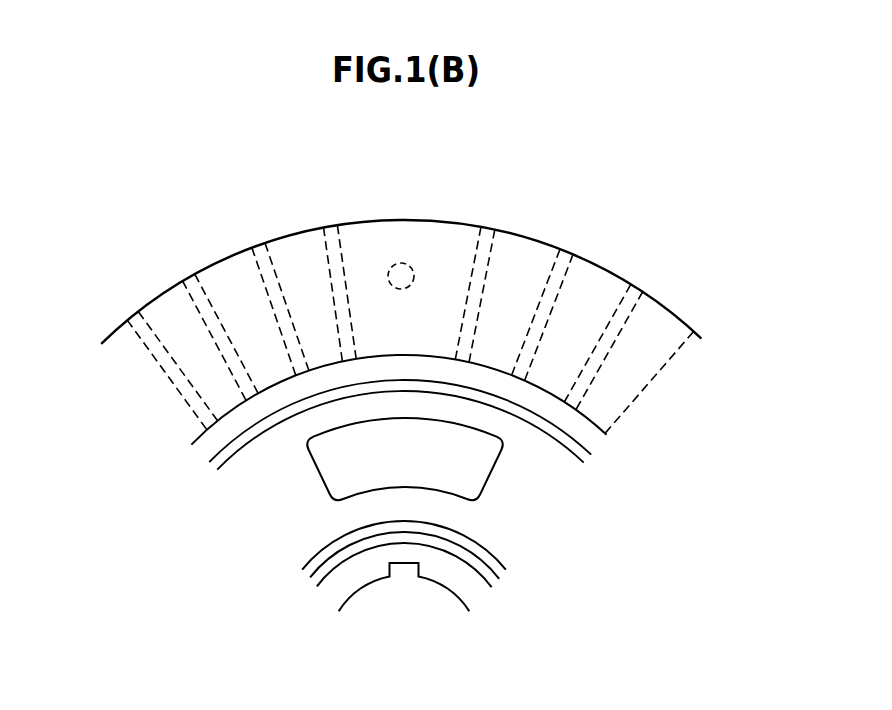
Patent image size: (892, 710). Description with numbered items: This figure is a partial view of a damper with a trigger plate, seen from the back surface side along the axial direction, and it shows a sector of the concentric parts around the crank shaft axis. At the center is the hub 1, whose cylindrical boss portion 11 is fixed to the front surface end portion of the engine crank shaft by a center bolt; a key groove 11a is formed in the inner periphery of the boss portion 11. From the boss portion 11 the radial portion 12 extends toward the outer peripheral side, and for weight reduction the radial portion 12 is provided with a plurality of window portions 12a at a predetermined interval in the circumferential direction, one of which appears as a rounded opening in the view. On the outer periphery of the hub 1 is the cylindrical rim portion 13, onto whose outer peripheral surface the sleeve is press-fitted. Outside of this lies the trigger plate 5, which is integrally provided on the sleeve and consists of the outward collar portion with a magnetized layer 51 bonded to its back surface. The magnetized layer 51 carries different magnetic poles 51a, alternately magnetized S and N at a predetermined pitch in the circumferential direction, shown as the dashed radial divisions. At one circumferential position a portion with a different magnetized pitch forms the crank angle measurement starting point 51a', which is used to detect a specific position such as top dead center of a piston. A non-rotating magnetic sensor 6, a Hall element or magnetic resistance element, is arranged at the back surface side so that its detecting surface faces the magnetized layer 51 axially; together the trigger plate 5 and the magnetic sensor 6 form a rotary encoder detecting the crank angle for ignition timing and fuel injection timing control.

The hub 1 is at (637, 462).
The trigger plate 5 is at (603, 264).
The magnetized layer 51 is at (454, 293).
The magnetic poles 51a is at (385, 315).
The crank angle measurement starting point 51a' is at (410, 191).
The magnetic sensor 6 is at (378, 267).
The boss portion 11 is at (338, 587).
The key groove 11a is at (407, 568).
The radial portion 12 is at (268, 502).
The window portions 12a is at (472, 468).
The rim portion 13 is at (533, 398).